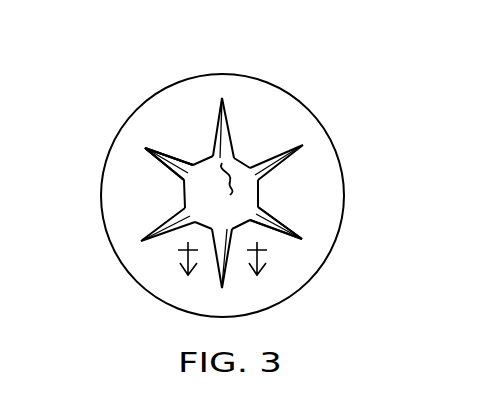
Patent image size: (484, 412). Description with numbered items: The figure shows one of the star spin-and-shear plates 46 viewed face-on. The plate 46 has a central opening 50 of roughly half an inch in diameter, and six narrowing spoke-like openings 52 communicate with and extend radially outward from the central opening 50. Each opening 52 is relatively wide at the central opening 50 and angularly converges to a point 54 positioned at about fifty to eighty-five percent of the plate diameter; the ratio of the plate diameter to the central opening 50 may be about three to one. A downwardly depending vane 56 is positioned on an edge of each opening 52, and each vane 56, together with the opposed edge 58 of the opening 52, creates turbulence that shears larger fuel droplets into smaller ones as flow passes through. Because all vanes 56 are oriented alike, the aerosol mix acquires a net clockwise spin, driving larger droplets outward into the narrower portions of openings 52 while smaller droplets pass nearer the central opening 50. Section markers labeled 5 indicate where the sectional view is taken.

The star spin-and-shear plate 46 is at (358, 78).
The central opening 50 is at (233, 160).
The spoke-like openings 52 is at (181, 164).
The point 54 is at (147, 149).
The vane 56 is at (178, 168).
The opposed edge 58 is at (145, 238).
The section line 5 is at (222, 274).